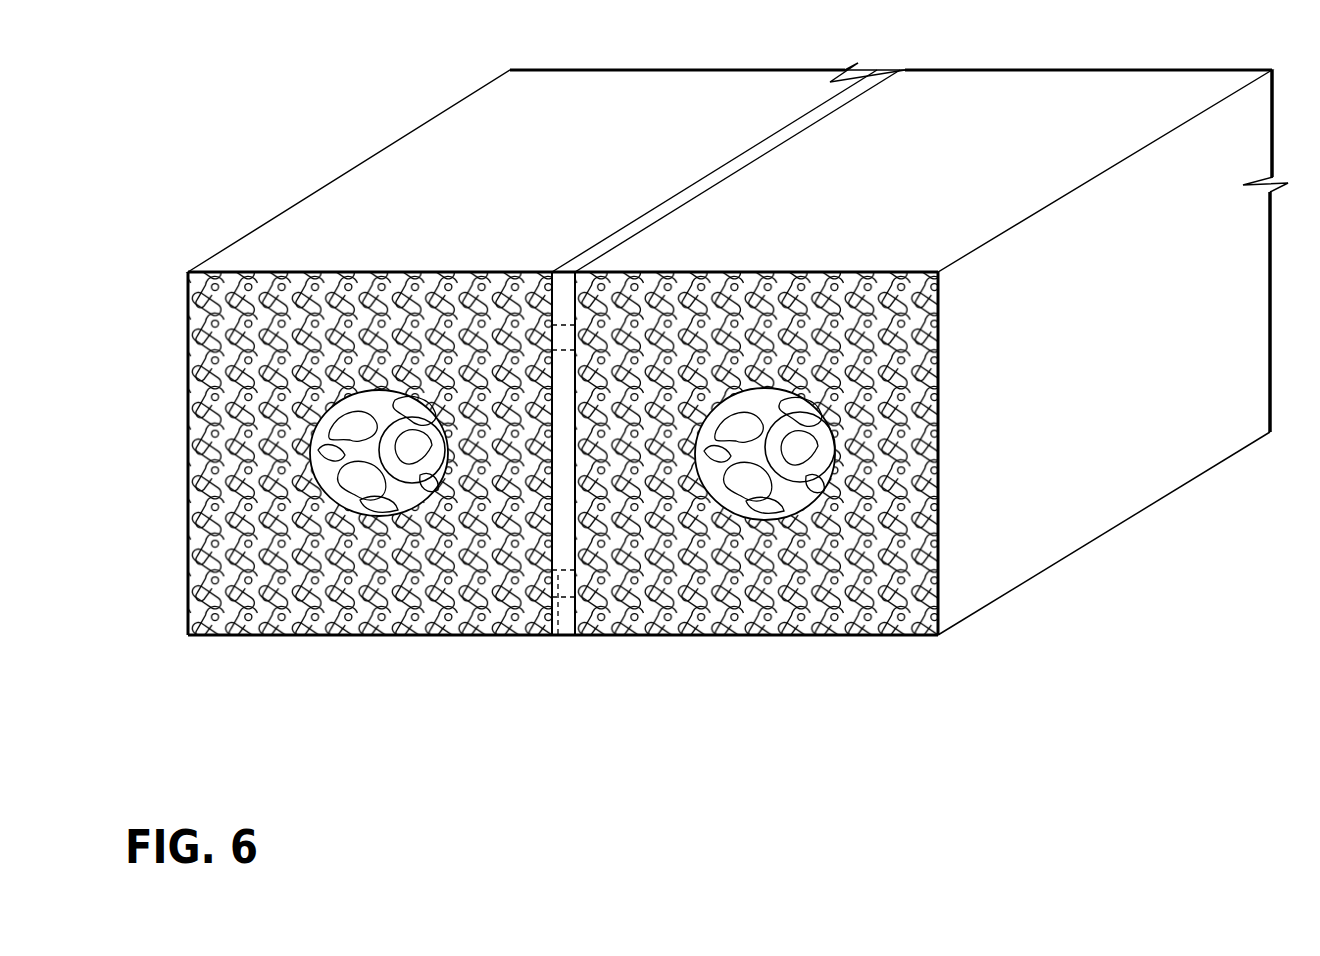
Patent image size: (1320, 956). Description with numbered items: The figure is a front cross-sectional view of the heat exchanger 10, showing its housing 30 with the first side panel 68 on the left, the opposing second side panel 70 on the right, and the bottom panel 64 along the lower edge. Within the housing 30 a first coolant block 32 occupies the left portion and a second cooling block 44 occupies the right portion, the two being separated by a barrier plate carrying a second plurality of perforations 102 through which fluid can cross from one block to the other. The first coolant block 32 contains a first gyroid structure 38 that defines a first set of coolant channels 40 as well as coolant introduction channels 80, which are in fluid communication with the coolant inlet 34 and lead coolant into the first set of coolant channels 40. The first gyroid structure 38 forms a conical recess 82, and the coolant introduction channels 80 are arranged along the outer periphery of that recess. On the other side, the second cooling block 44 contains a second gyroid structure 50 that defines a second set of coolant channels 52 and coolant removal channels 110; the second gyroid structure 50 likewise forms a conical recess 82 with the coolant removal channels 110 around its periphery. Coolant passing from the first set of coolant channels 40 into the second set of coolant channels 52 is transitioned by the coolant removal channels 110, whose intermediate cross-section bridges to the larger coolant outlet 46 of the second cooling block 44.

The heat exchanger 10 is at (222, 190).
The housing 30 is at (1072, 550).
The first coolant block 32 is at (222, 640).
The coolant inlet 34 is at (348, 513).
The first gyroid structure 38 is at (408, 617).
The first set of coolant channels 40 is at (430, 490).
The second cooling block 44 is at (658, 640).
The coolant outlet 46 is at (747, 507).
The second gyroid structure 50 is at (810, 640).
The second set of coolant channels 52 is at (817, 460).
The bottom panel 64 is at (1007, 595).
The first side panel 68 is at (188, 348).
The second side panel 70 is at (1158, 400).
The coolant introduction channels 80 is at (312, 450).
The conical recess 82 is at (330, 483).
The second plurality of perforations 102 is at (560, 640).
The coolant removal channels 110 is at (755, 388).